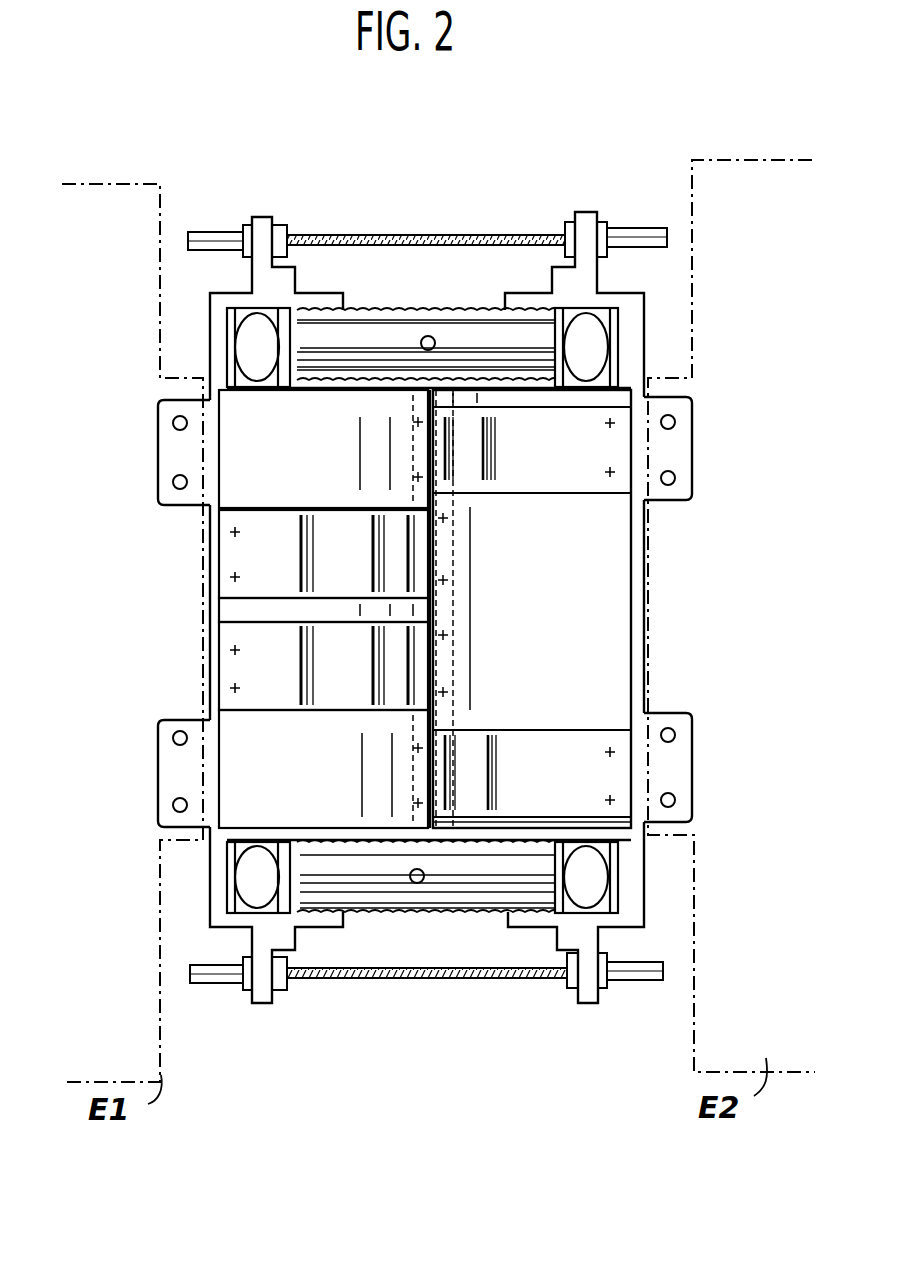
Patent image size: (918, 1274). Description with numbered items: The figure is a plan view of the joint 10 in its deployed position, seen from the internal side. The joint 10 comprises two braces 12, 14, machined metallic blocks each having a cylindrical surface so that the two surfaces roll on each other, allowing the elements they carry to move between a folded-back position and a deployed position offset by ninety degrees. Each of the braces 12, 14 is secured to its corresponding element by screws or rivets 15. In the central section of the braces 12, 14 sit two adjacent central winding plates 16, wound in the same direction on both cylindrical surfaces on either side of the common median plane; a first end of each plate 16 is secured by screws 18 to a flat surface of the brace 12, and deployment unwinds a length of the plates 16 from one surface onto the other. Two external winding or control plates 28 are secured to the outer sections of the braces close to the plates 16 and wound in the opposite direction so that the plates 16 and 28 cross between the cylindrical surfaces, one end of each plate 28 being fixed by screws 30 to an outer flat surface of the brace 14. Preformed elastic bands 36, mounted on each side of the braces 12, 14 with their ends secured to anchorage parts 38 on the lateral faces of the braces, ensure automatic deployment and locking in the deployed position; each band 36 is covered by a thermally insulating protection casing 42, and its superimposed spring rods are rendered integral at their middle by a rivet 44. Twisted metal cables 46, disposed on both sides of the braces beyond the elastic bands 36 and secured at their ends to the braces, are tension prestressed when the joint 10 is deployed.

The joint 10 is at (487, 158).
The brace 12 is at (263, 440).
The brace 14 is at (593, 642).
The screws or rivets 15 is at (174, 424).
The central winding plates 16 is at (400, 553).
The screws 18 is at (233, 534).
The external winding or control plates 28 is at (579, 614).
The screws 30 is at (608, 472).
The preformed elastic bands 36 is at (493, 307).
The anchorage parts 38 is at (633, 343).
The thermally insulating protection casing 42 is at (447, 306).
The rivet 44 is at (420, 345).
The twisted metal cables 46 is at (318, 238).